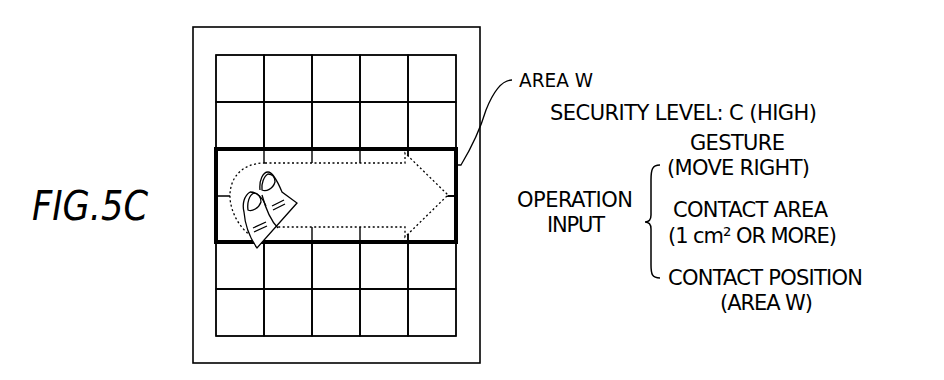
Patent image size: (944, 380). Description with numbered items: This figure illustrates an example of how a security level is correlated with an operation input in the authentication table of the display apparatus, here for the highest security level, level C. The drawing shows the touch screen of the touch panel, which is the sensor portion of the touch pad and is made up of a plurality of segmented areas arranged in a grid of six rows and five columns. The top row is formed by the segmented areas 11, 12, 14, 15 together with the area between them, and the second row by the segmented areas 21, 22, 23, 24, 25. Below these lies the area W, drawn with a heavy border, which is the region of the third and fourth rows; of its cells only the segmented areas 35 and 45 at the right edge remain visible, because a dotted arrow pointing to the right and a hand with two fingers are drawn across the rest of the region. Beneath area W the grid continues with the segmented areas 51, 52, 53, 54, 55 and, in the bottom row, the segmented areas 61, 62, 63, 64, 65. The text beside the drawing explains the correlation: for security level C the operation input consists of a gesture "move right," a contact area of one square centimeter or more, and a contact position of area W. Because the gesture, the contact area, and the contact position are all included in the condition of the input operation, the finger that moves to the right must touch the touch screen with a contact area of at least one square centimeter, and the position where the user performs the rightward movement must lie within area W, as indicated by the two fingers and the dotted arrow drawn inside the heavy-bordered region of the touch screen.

The segmented area 11 is at (240, 78).
The segmented area 12 is at (288, 78).
The segmented area 14 is at (384, 78).
The segmented area 15 is at (432, 78).
The segmented area 21 is at (240, 125).
The segmented area 22 is at (288, 125).
The segmented area 23 is at (336, 125).
The segmented area 24 is at (384, 125).
The segmented area 25 is at (432, 125).
The segmented area 35 is at (432, 172).
The segmented area 45 is at (432, 219).
The segmented area 51 is at (240, 265).
The segmented area 52 is at (288, 265).
The segmented area 53 is at (336, 265).
The segmented area 54 is at (384, 265).
The segmented area 55 is at (432, 265).
The segmented area 61 is at (240, 312).
The segmented area 62 is at (288, 312).
The segmented area 63 is at (336, 312).
The segmented area 64 is at (384, 312).
The segmented area 65 is at (432, 312).